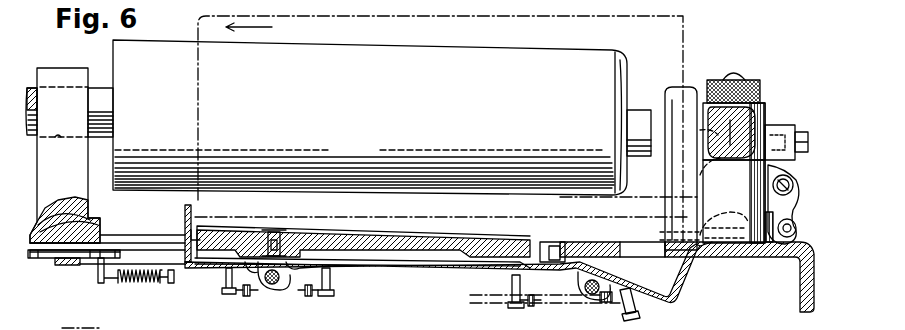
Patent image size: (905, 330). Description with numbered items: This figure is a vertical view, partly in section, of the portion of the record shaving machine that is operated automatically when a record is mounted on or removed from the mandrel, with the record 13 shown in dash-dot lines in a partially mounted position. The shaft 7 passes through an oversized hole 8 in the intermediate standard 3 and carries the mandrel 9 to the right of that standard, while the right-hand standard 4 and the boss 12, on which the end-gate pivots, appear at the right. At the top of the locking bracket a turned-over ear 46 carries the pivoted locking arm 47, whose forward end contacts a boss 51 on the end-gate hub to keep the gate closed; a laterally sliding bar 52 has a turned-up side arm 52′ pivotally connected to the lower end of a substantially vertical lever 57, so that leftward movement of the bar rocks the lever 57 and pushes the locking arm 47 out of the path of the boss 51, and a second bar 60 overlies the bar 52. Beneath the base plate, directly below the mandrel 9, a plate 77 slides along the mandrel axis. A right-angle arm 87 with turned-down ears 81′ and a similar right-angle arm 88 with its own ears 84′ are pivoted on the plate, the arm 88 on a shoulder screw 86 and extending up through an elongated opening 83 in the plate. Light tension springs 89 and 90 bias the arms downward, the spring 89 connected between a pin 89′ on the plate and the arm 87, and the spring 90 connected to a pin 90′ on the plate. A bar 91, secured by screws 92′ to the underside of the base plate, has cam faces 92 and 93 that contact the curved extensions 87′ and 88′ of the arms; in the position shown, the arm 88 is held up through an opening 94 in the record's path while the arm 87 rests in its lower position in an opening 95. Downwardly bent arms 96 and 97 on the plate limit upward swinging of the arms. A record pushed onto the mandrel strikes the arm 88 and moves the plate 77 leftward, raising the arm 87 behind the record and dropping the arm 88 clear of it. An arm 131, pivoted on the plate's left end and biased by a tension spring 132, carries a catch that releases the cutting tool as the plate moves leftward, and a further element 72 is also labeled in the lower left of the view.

The intermediate standard 3 is at (68, 78).
The right-hand standard 4 is at (692, 95).
The shaft 7 is at (102, 95).
The oversized hole 8 is at (62, 141).
The mandrel 9 is at (163, 50).
The boss 12 is at (745, 178).
The cylindrical record 13 is at (196, 95).
The turned-over ear 46 is at (803, 152).
The locking arm 47 is at (804, 136).
The boss 51 is at (788, 128).
The bar 52 is at (704, 185).
The side arm 52′ is at (793, 222).
The lever 57 is at (790, 205).
The bar 60 is at (680, 238).
The rod 72 is at (70, 324).
The plate 77 is at (448, 274).
The turned-down ears 81′ is at (628, 284).
The elongated opening 83 is at (72, 265).
The link 84′ is at (260, 262).
The shoulder screw 86 is at (274, 285).
The right-angle arm 87 is at (688, 280).
The curved extension 87′ is at (570, 262).
The right-angle arm 88 is at (208, 266).
The curved extension 88′ is at (320, 250).
The tension spring 89 is at (533, 308).
The pin 89′ is at (511, 290).
The tension spring 90 is at (248, 298).
The pin 90′ is at (330, 284).
The bar 91 is at (400, 262).
The cam face 92 is at (596, 268).
The screws 92′ is at (278, 232).
The cam face 93 is at (215, 250).
The opening 94 is at (100, 240).
The opening 95 is at (700, 258).
The downwardly bent arm 96 is at (583, 292).
The downwardly bent arm 97 is at (326, 296).
The arm 131 is at (48, 258).
The tension spring 132 is at (138, 283).